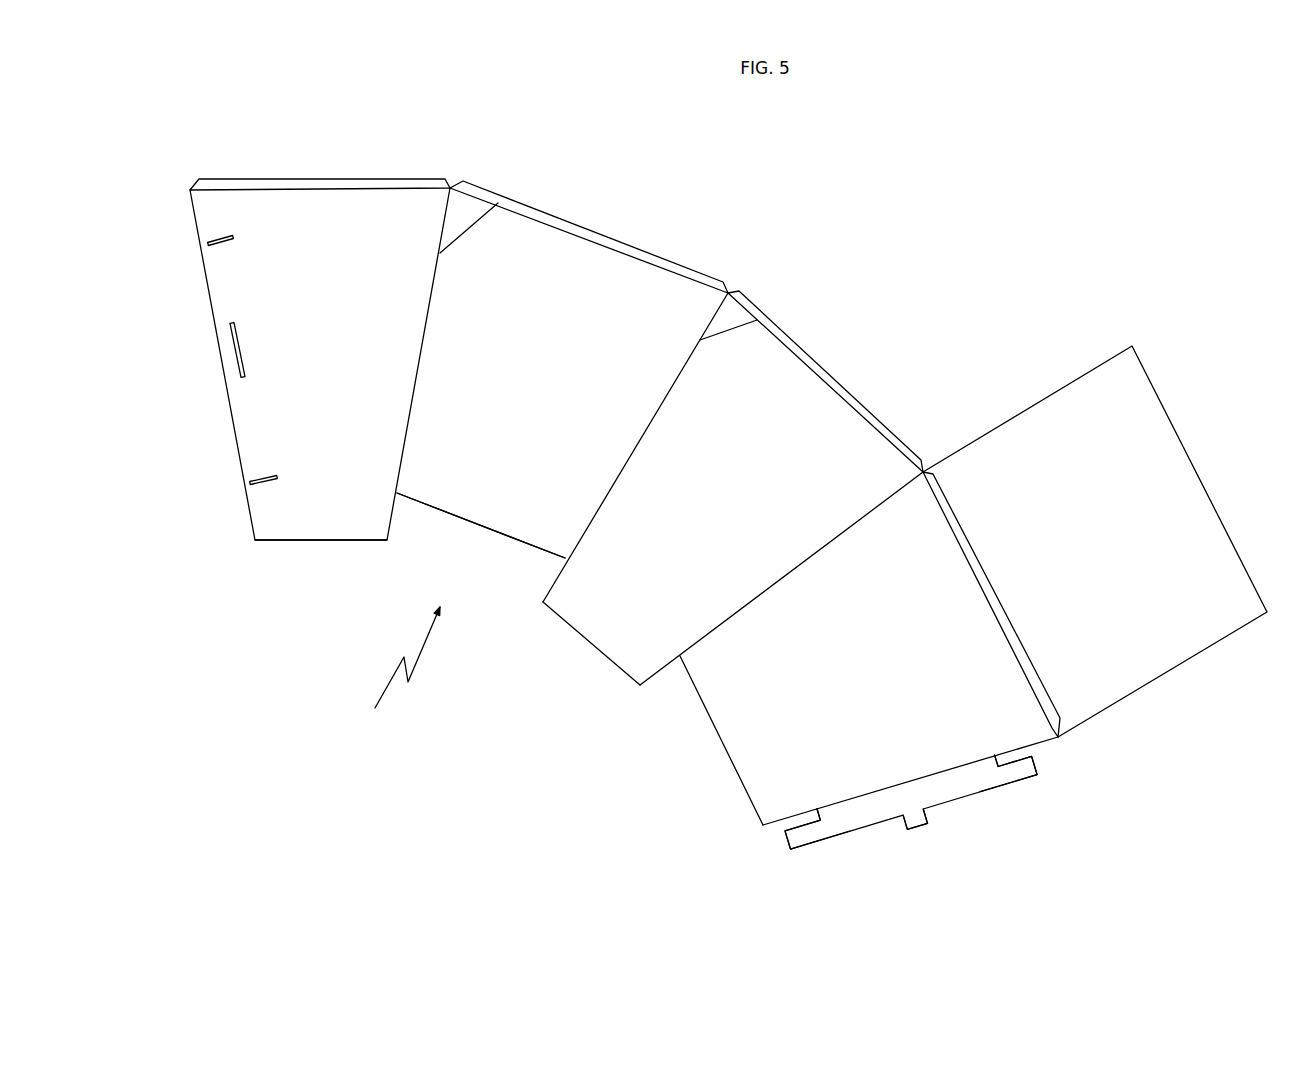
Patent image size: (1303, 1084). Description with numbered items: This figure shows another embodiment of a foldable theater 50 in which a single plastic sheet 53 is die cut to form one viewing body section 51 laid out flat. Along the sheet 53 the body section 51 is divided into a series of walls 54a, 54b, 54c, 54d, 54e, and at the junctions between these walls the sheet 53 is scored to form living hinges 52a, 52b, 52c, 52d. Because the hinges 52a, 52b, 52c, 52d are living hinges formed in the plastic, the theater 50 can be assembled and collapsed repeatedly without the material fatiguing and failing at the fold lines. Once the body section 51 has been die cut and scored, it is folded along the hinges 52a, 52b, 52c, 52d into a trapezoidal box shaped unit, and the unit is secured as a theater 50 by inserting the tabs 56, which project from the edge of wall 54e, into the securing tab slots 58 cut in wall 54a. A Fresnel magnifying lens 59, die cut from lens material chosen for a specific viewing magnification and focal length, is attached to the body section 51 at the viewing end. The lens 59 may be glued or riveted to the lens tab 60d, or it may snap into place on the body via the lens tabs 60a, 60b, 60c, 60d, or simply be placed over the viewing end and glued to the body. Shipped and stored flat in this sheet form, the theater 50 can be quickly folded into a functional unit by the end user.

The foldable theater 50 is at (398, 669).
The viewing body section 51 is at (300, 437).
The hinge 52a is at (498, 203).
The hinge 52b is at (757, 320).
The hinge 52c is at (870, 508).
The hinge 52d is at (958, 770).
The sheet 53 is at (546, 388).
The wall 54a is at (327, 525).
The wall 54b is at (507, 485).
The wall 54c is at (605, 620).
The wall 54d is at (732, 695).
The wall 54e is at (865, 808).
The tab 56 is at (797, 835).
The securing tab slot 58 is at (217, 238).
The Fresnel magnifying lens 59 is at (1078, 408).
The lens tab 60a is at (300, 186).
The lens tab 60b is at (637, 257).
The lens tab 60c is at (838, 387).
The lens tab 60d is at (1005, 620).